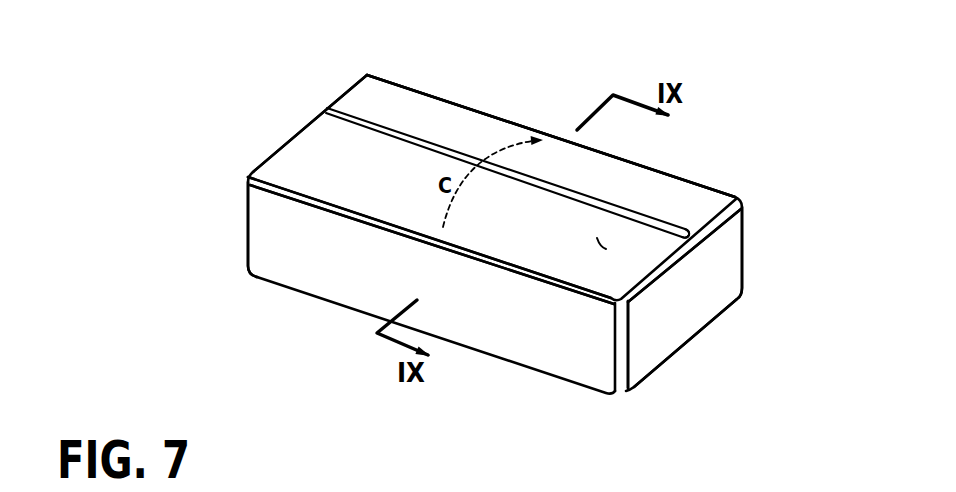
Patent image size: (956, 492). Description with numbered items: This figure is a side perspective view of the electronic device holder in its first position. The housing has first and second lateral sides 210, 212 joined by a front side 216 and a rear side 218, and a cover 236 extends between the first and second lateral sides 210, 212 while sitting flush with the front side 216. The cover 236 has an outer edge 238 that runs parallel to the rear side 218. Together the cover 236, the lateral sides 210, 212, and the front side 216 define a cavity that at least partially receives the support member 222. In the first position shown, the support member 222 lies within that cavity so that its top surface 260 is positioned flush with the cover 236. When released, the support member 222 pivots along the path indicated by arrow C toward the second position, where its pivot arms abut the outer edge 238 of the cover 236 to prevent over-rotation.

The first lateral side 210 is at (278, 148).
The second lateral side 212 is at (667, 328).
The front side 216 is at (268, 212).
The rear side 218 is at (683, 178).
The support member 222 is at (635, 255).
The cover 236 is at (395, 112).
The outer edge 238 is at (462, 152).
The top surface 260 is at (597, 238).